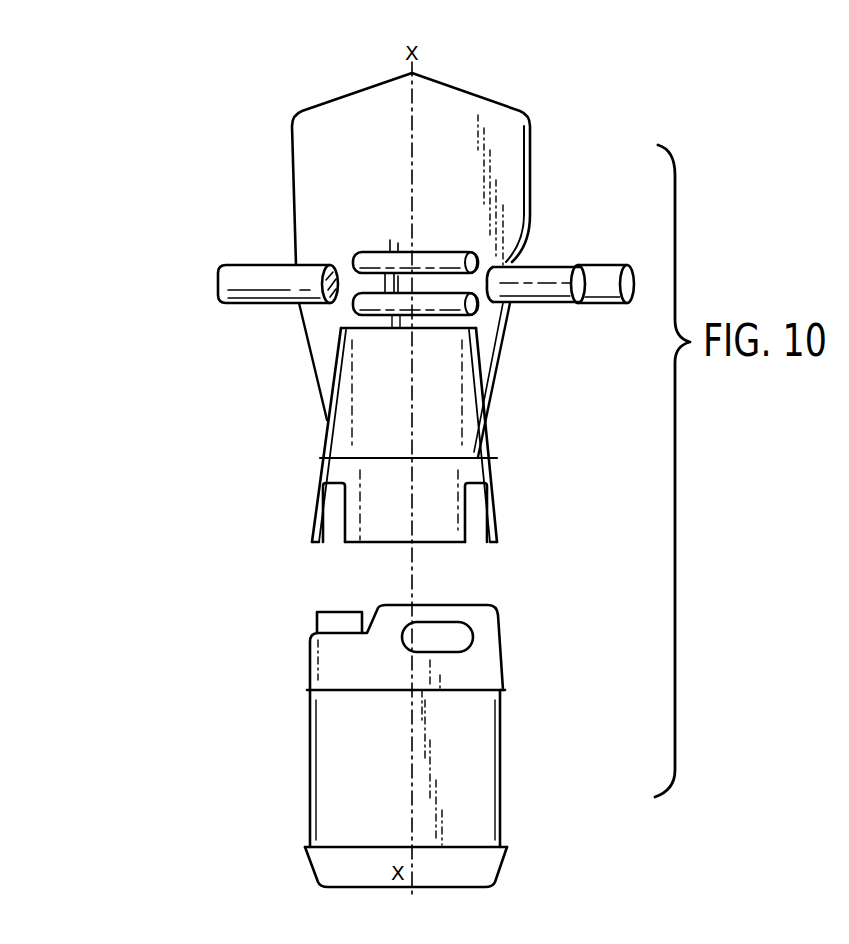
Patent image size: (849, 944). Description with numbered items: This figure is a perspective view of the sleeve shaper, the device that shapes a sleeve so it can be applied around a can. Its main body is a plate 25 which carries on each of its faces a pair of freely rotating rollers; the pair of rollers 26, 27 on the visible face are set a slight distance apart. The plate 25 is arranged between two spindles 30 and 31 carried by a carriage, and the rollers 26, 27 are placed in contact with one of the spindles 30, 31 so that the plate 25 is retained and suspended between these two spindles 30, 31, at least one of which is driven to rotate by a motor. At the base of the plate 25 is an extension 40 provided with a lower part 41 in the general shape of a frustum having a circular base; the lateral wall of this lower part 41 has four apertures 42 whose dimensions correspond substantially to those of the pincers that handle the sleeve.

The plate 25 is at (305, 177).
The roller 26 is at (353, 258).
The roller 27 is at (353, 305).
The spindle 30 is at (257, 270).
The spindle 31 is at (600, 290).
The extension 40 is at (352, 380).
The lower part 41 is at (312, 507).
The aperture 42 is at (345, 535).